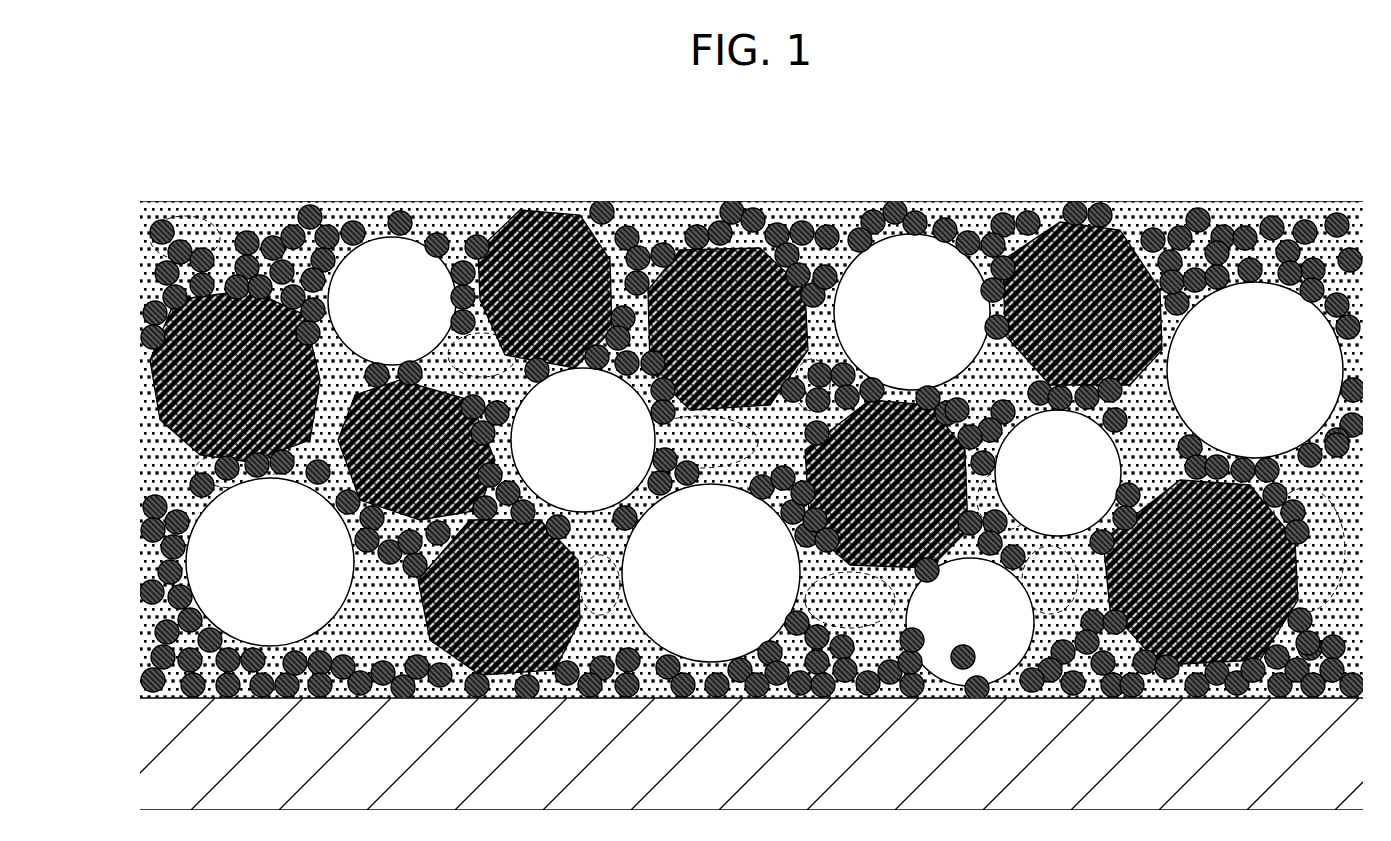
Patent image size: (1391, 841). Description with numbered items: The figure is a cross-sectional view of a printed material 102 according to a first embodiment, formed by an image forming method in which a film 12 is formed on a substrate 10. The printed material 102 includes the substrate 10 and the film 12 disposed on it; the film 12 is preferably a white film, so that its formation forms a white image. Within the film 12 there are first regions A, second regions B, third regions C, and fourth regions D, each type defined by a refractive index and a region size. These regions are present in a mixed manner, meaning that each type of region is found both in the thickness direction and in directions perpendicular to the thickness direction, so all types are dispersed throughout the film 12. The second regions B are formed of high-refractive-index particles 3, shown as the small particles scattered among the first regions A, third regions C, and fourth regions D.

The printed material 102 is at (282, 150).
The substrate 10 is at (100, 764).
The film 12 is at (122, 202).
The high-refractive-index particles 3 is at (603, 212).
The first regions A is at (768, 250).
The second regions B is at (818, 365).
The third regions C is at (385, 236).
The fourth regions D is at (470, 337).